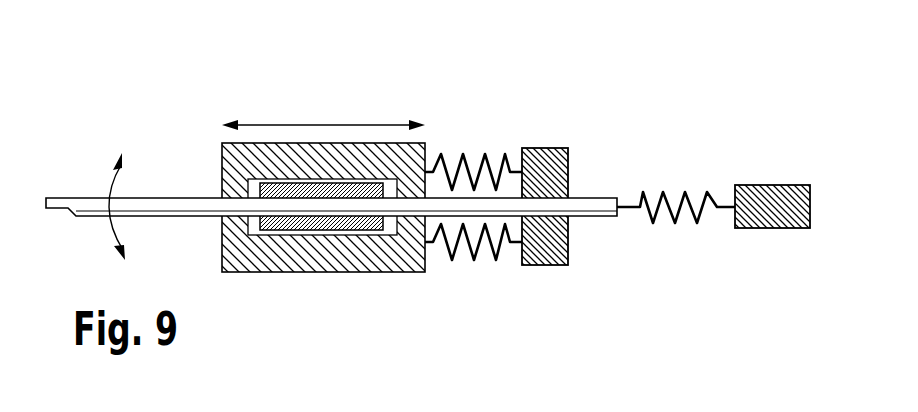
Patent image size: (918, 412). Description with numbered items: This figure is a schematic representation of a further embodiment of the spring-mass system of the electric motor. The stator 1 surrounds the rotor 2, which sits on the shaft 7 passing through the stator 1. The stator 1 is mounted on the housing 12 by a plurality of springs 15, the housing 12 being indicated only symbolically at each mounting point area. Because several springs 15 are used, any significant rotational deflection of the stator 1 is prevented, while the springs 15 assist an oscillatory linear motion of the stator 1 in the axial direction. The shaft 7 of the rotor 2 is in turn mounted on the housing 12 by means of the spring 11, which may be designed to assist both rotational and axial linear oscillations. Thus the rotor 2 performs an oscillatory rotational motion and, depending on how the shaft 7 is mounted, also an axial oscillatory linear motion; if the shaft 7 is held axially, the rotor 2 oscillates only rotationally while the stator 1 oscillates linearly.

The stator 1 is at (338, 137).
The rotor 2 is at (298, 180).
The shaft 7 is at (182, 202).
The spring 11 is at (682, 194).
The housing 12 is at (547, 148).
The springs 15 is at (472, 158).